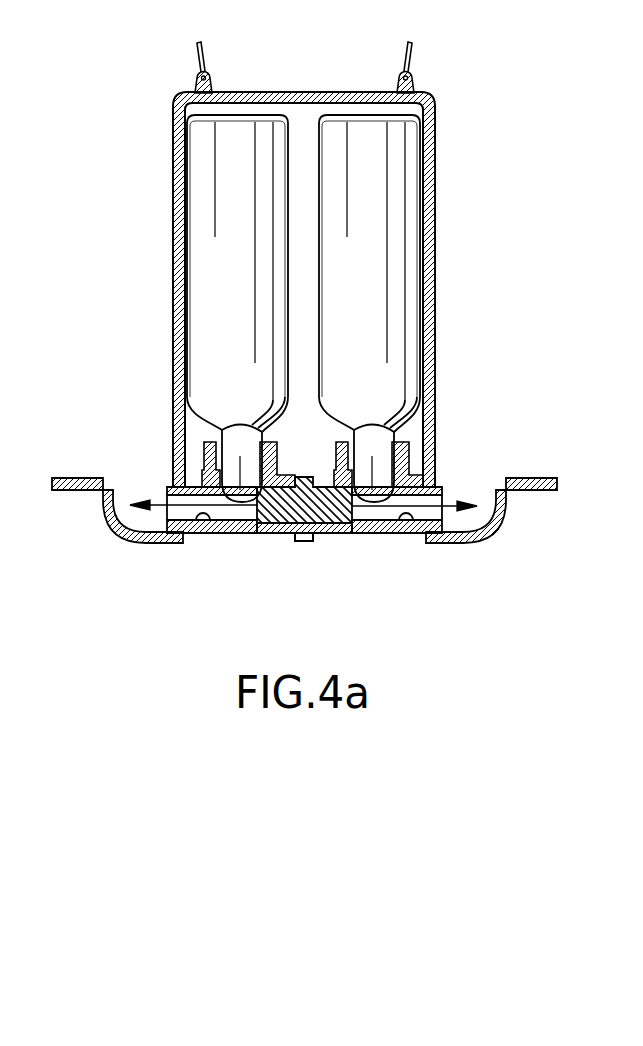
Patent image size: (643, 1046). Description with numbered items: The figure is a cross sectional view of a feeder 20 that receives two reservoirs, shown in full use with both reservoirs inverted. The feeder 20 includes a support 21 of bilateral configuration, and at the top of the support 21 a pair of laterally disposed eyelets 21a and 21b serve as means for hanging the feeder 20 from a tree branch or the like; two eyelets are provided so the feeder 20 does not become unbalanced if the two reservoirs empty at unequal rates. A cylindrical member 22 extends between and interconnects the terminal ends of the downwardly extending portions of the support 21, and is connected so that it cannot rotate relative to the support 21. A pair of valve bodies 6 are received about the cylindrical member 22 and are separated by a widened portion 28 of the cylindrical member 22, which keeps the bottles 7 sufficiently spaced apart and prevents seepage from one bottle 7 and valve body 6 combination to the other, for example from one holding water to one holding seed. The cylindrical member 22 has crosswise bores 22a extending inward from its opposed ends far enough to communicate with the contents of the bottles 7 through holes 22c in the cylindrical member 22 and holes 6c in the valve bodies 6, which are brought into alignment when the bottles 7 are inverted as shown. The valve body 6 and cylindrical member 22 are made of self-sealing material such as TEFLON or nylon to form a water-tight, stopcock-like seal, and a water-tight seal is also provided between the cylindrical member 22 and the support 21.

The feeder 20 is at (304, 329).
The support 21 is at (332, 260).
The eyelet 21a is at (210, 73).
The eyelet 21b is at (395, 73).
The bottle 7 is at (202, 230).
The hole 6c is at (225, 478).
The hole 22c is at (217, 470).
The cylindrical member 22 is at (328, 542).
The valve body 6 is at (213, 547).
The crosswise bore 22a is at (193, 545).
The widened portion 28 is at (300, 542).